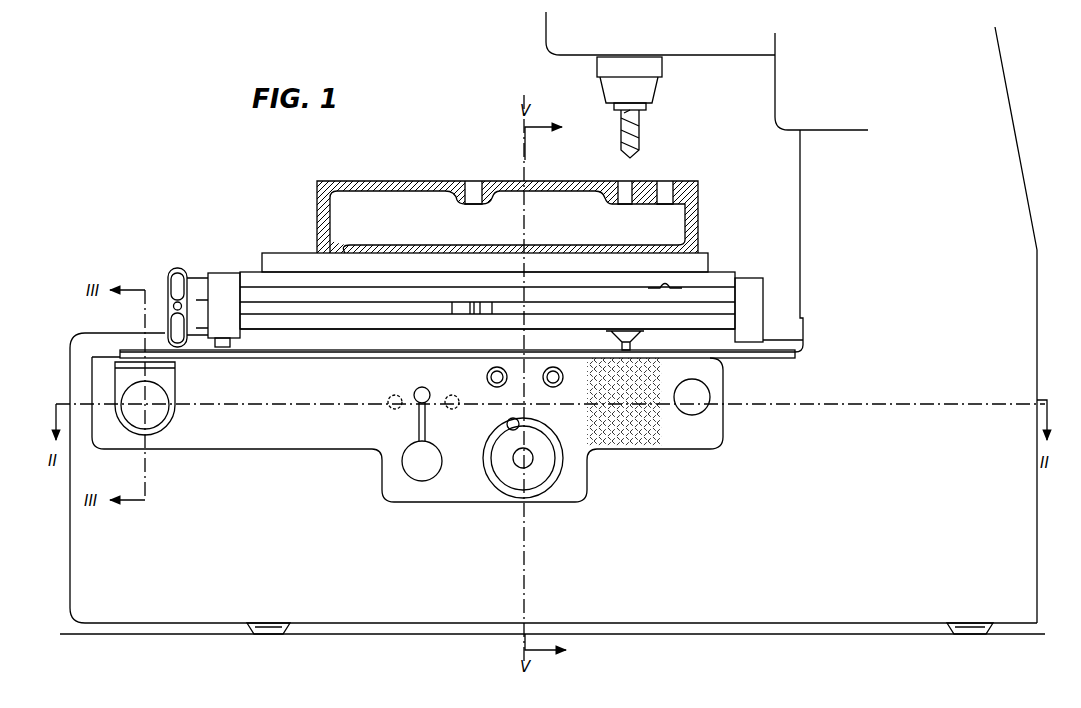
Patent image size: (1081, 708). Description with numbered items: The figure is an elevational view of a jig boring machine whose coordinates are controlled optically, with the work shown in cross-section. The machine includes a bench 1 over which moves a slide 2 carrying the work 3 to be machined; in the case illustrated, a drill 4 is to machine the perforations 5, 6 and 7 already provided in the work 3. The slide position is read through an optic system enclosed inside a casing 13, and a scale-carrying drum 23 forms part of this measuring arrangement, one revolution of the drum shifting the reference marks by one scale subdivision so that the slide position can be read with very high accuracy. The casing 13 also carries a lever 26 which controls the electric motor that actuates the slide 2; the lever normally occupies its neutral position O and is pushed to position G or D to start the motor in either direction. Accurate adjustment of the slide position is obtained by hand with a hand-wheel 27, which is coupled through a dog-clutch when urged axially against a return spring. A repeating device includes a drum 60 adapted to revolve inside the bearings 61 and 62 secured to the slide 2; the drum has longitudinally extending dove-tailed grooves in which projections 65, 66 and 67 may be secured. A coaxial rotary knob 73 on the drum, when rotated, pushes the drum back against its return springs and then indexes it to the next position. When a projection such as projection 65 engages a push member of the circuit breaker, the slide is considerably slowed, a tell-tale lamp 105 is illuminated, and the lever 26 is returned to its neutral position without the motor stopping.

The bench 1 is at (70, 523).
The slide 2 is at (272, 256).
The work 3 is at (370, 182).
The drill 4 is at (632, 124).
The perforation 5 is at (473, 186).
The perforation 6 is at (621, 186).
The perforation 7 is at (665, 190).
The casing 13 is at (229, 431).
The scale-carrying drum 23 is at (170, 419).
The lever 26 is at (426, 432).
The hand-wheel 27 is at (485, 462).
The drum 60 is at (312, 322).
The bearing 61 is at (757, 293).
The bearing 62 is at (222, 281).
The projection 65 is at (642, 336).
The projection 66 is at (487, 340).
The projection 67 is at (666, 290).
The rotary knob 73 is at (172, 272).
The tell-tale lamp 105 is at (553, 386).